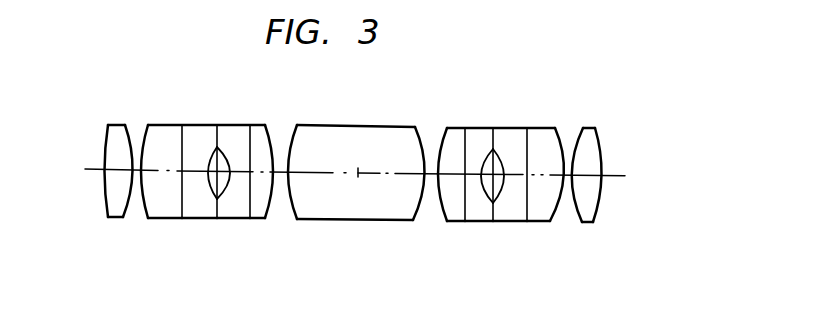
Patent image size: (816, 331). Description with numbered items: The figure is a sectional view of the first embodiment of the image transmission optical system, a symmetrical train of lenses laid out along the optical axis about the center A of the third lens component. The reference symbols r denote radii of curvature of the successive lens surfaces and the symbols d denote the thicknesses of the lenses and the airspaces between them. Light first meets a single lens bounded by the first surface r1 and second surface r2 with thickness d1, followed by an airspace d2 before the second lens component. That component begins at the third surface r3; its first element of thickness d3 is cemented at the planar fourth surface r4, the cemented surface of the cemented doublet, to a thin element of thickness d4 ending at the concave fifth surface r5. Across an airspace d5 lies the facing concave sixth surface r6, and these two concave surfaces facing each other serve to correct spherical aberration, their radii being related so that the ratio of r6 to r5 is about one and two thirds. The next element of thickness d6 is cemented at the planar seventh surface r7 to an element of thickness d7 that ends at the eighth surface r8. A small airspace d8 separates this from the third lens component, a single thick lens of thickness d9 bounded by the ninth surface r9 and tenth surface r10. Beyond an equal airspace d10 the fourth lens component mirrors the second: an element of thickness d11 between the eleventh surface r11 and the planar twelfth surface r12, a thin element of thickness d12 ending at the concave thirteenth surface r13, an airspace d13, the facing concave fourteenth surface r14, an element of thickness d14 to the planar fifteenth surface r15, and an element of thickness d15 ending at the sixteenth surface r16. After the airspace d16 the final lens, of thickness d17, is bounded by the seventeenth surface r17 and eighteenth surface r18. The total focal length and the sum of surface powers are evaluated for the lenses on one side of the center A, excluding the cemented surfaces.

The center of the third lens component A is at (355, 163).
The radius of curvature of the first lens surface r1 is at (105, 136).
The radius of curvature of the second lens surface r2 is at (132, 136).
The radius of curvature of the third lens surface r3 is at (146, 136).
The radius of curvature of the fourth lens surface r4 is at (181, 136).
The radius of curvature of the fifth lens surface r5 is at (211, 145).
The radius of curvature of the sixth lens surface r6 is at (230, 145).
The radius of curvature of the seventh lens surface r7 is at (250, 136).
The radius of curvature of the eighth lens surface r8 is at (270, 136).
The radius of curvature of the ninth lens surface r9 is at (296, 136).
The radius of curvature of the tenth lens surface r10 is at (420, 141).
The radius of curvature of the eleventh lens surface r11 is at (438, 140).
The radius of curvature of the twelfth lens surface r12 is at (464, 140).
The radius of curvature of the thirteenth lens surface r13 is at (490, 141).
The radius of curvature of the fourteenth lens surface r14 is at (505, 141).
The radius of curvature of the fifteenth lens surface r15 is at (526, 141).
The radius of curvature of the sixteenth lens surface r16 is at (562, 141).
The radius of curvature of the seventeenth lens surface r17 is at (582, 141).
The radius of curvature of the eighteenth lens surface r18 is at (603, 142).
The thickness of the first lens d1 is at (117, 219).
The airspace between the first lens and second lens component d2 is at (138, 219).
The thickness of the first element of the second lens component d3 is at (164, 220).
The thickness of the second element of the second lens component d4 is at (200, 220).
The airspace between the facing concave surfaces d5 is at (216, 220).
The thickness of the third element of the second lens component d6 is at (240, 220).
The thickness of the fourth element of the second lens component d7 is at (258, 220).
The airspace between the second and third lens components d8 is at (282, 221).
The thickness of the third lens component d9 is at (342, 221).
The airspace between the third and fourth lens components d10 is at (430, 223).
The thickness of the first element of the fourth lens component d11 is at (452, 223).
The thickness of the second element of the fourth lens component d12 is at (471, 223).
The airspace between the facing concave surfaces of the fourth lens component d13 is at (491, 223).
The thickness of the third element of the fourth lens component d14 is at (515, 223).
The thickness of the fourth element of the fourth lens component d15 is at (545, 223).
The airspace between the fourth lens component and last lens d16 is at (569, 223).
The thickness of the last lens d17 is at (598, 223).